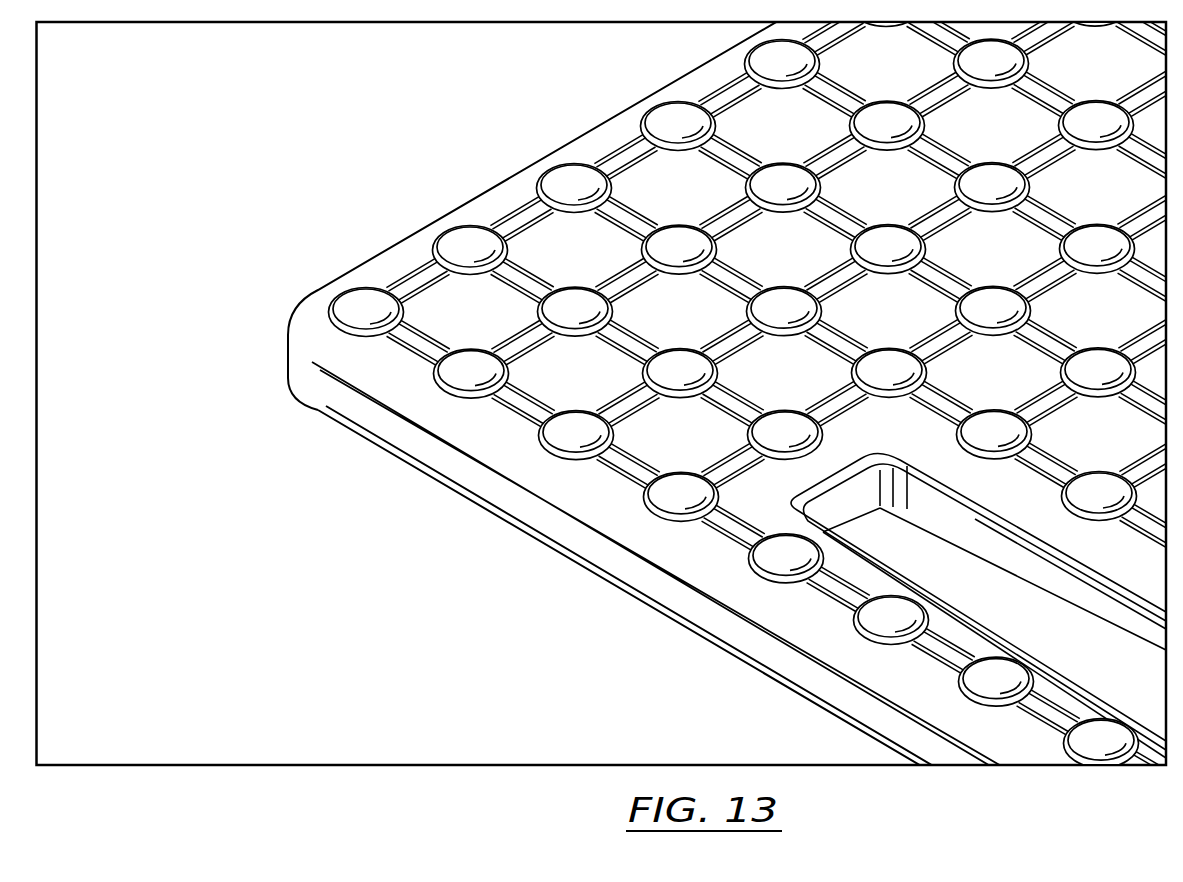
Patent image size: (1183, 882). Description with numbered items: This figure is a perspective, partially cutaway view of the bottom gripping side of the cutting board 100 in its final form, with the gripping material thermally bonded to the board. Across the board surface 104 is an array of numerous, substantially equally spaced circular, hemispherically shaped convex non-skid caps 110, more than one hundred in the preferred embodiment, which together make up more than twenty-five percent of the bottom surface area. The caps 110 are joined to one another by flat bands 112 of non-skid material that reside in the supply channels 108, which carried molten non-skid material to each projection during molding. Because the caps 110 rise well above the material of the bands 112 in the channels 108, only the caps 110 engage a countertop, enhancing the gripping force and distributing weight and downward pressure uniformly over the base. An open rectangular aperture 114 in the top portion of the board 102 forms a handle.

The cutting board 100 is at (531, 612).
The board 102 is at (802, 690).
The board surface 104 is at (856, 712).
The supply channels 108 is at (813, 593).
The non-skid caps 110 is at (686, 120).
The flat bands 112 is at (395, 349).
The open rectangular aperture 114 is at (872, 500).